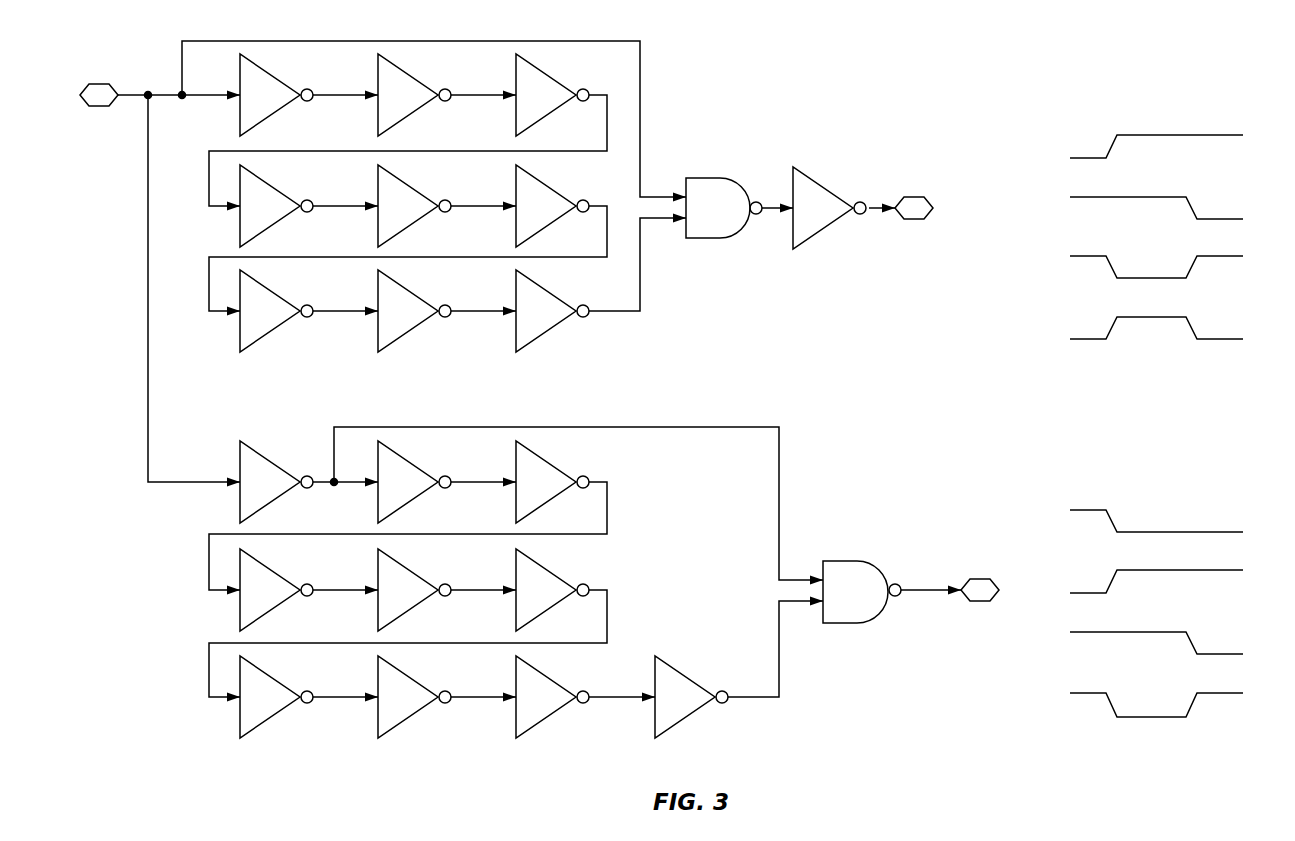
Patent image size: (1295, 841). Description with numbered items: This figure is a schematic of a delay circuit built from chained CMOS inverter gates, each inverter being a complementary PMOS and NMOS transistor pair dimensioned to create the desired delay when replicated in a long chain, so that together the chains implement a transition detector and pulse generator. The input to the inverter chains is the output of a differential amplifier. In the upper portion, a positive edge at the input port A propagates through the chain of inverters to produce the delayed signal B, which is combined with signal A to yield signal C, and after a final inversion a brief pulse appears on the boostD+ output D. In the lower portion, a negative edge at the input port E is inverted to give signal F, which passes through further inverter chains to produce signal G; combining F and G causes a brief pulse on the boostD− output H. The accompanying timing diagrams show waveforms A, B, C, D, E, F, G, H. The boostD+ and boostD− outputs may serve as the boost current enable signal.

The input port signal A is at (680, 121).
The delayed signal B is at (916, 254).
The signal C is at (1002, 242).
The boostD+ output D is at (1055, 268).
The input port signal for negative edge E is at (695, 313).
The delayed signal F is at (778, 512).
The delayed signal G is at (985, 647).
The boostD− output H is at (1072, 642).